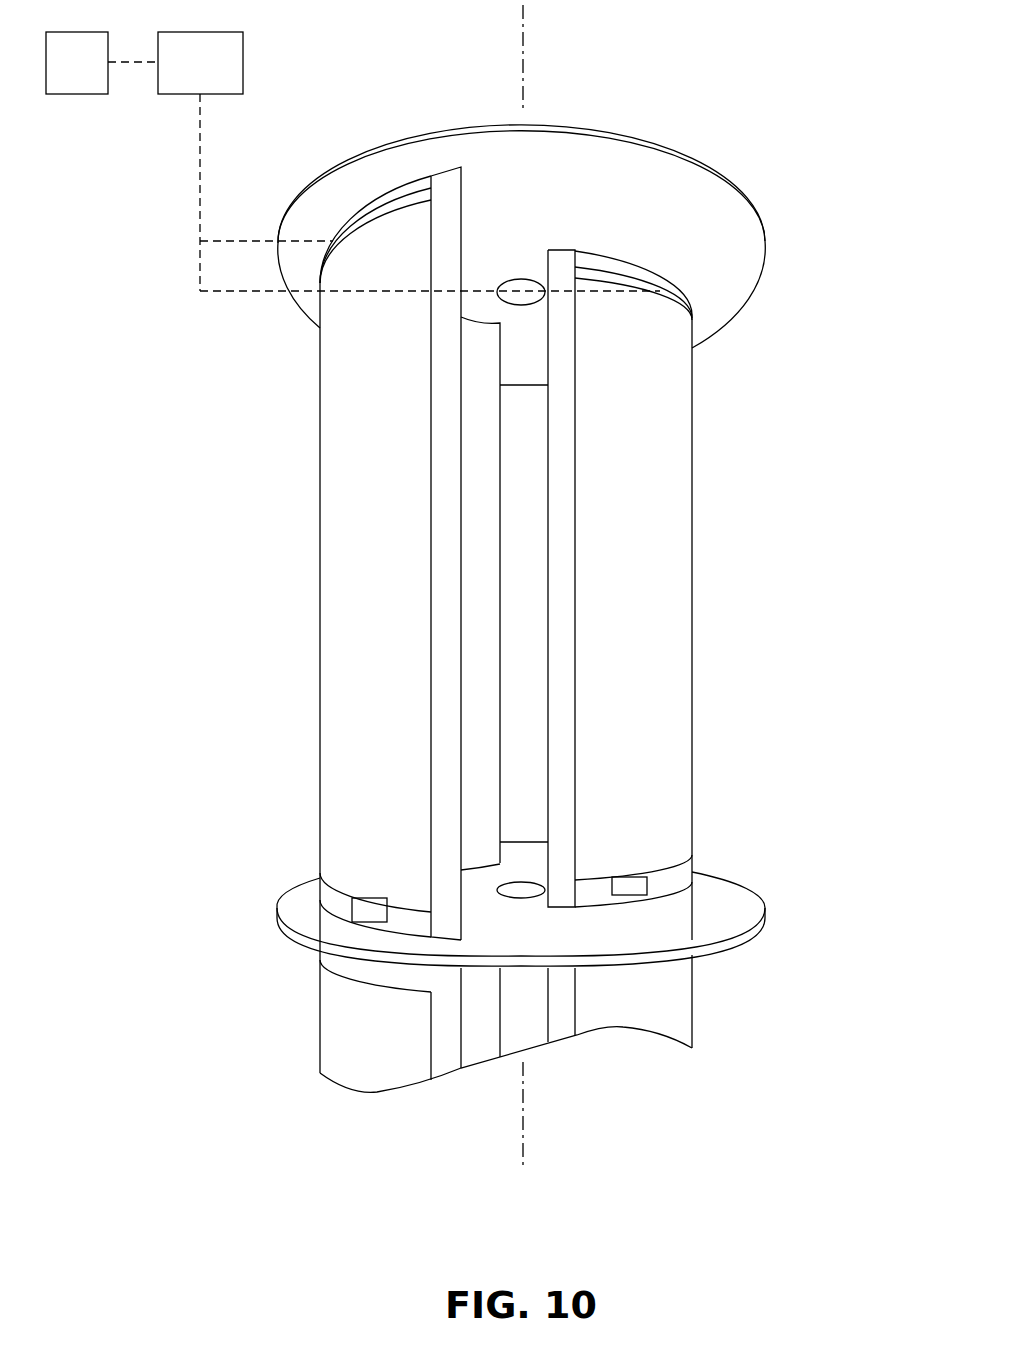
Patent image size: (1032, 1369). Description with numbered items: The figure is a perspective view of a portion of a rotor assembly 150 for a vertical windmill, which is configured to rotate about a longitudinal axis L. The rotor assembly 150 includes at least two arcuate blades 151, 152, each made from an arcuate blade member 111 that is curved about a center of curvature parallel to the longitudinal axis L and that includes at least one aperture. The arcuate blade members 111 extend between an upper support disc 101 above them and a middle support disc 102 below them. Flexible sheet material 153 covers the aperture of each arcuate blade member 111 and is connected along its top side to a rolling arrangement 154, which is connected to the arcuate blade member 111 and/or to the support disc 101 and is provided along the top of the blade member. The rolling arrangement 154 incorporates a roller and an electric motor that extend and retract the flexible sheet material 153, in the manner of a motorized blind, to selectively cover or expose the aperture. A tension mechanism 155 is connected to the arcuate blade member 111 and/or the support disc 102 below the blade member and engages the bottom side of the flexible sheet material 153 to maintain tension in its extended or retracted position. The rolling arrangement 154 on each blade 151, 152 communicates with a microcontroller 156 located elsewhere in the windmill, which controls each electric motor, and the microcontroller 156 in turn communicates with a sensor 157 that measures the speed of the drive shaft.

The rotor assembly 150 is at (699, 104).
The longitudinal axis L is at (527, 62).
The upper support disc 101 is at (742, 237).
The middle support disc 102 is at (743, 909).
The arcuate blade 151 is at (330, 655).
The arcuate blade 152 is at (674, 650).
The flexible sheet material 153 is at (336, 522).
The rolling arrangement 154 is at (352, 228).
The tension mechanism 155 is at (368, 914).
The arcuate blade member 111 is at (330, 897).
The microcontroller 156 is at (243, 62).
The sensor 157 is at (80, 94).